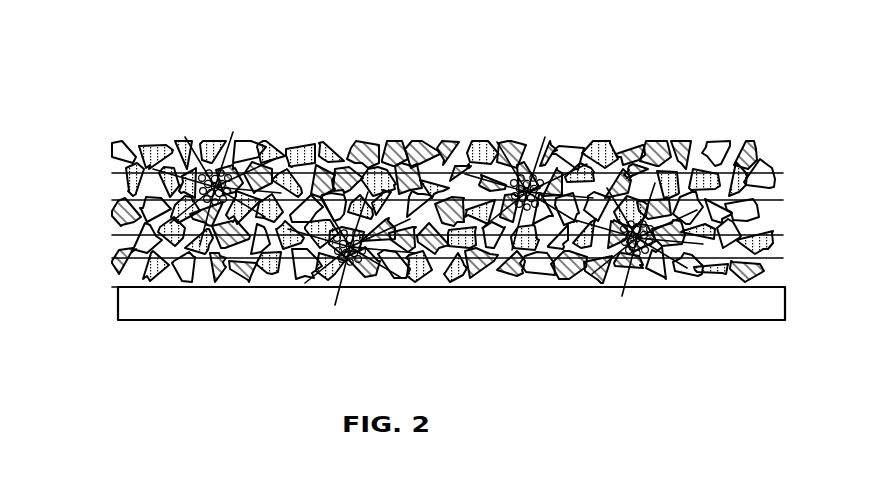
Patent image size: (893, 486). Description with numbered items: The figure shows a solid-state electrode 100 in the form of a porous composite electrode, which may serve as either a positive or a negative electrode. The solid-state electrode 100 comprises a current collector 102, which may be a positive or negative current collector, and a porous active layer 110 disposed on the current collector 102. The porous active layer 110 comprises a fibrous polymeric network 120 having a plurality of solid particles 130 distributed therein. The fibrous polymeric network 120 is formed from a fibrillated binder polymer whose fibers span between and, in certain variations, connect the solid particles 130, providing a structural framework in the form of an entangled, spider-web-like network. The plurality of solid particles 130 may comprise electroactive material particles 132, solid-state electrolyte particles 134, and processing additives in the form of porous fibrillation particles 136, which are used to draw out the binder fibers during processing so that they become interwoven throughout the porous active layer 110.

The solid-state electrode 100 is at (185, 96).
The current collector 102 is at (137, 319).
The porous active layer 110 is at (108, 143).
The fibrous polymeric network 120 is at (309, 192).
The solid particles 130 is at (523, 152).
The electroactive material particles 132 is at (598, 148).
The solid-state electrolyte particles 134 is at (697, 143).
The porous fibrillation particles 136 is at (535, 148).